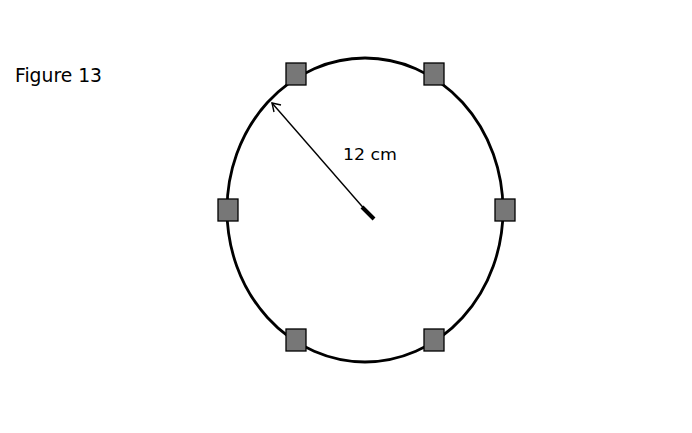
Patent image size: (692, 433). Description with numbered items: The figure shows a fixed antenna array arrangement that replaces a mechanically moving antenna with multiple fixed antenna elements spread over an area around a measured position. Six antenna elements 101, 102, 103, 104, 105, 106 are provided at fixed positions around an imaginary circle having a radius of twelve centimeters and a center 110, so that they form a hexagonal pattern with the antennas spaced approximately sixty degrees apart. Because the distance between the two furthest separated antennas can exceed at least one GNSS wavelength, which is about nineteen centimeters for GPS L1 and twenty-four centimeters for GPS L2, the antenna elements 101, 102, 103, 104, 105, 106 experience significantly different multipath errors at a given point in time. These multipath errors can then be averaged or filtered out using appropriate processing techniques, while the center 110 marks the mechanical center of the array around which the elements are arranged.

The antenna element 101 is at (224, 50).
The antenna element 102 is at (497, 55).
The antenna element 103 is at (581, 218).
The antenna element 104 is at (486, 375).
The antenna element 105 is at (268, 372).
The antenna element 106 is at (163, 218).
The center 110 is at (402, 233).